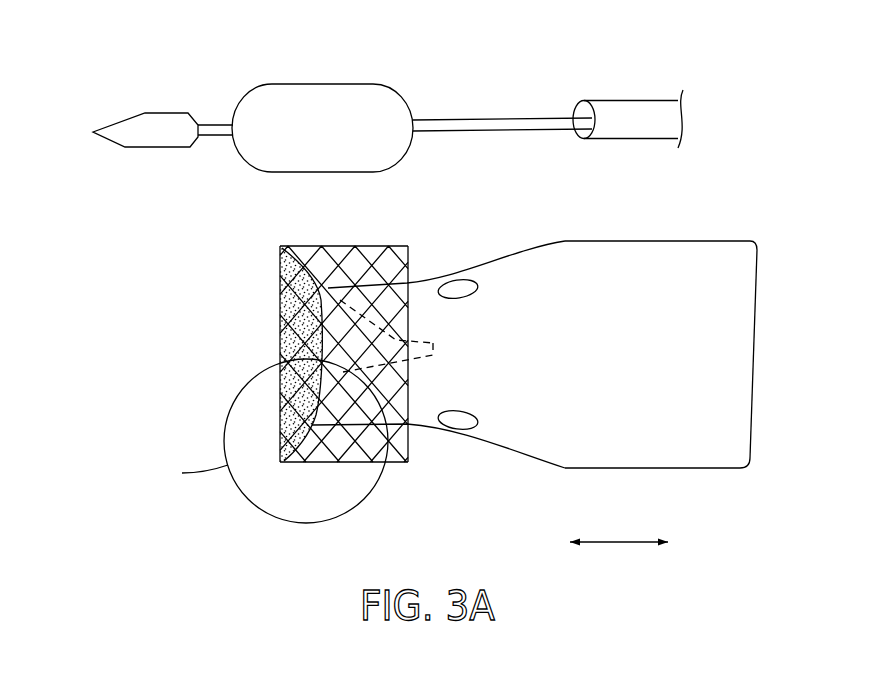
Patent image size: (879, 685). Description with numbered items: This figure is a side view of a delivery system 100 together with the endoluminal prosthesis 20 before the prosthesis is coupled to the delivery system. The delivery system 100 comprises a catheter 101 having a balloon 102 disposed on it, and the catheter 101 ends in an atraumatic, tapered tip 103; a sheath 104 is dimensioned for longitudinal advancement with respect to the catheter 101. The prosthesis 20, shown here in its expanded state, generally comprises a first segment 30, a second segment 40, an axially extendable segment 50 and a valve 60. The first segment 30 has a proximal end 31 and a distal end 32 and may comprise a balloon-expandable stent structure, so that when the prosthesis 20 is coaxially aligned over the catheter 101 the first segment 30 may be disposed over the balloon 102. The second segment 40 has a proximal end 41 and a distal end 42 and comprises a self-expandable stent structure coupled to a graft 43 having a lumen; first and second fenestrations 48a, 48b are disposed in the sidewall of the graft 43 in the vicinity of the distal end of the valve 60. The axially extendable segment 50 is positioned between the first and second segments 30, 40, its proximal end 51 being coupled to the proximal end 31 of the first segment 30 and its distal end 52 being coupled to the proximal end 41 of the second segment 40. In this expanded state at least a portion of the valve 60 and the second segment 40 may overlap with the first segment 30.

The delivery system 100 is at (221, 70).
The catheter 101 is at (495, 123).
The balloon 102 is at (353, 138).
The tapered tip 103 is at (145, 130).
The sheath 104 is at (633, 119).
The endoluminal prosthesis 20 is at (250, 262).
The first segment 30 is at (338, 468).
The proximal end of first segment 31 is at (285, 463).
The distal end of first segment 32 is at (402, 463).
The second segment 40 is at (650, 426).
The proximal end of second segment 41 is at (333, 288).
The distal end of second segment 42 is at (735, 241).
The graft 43 is at (722, 450).
The first fenestration 48a is at (458, 288).
The second fenestration 48b is at (457, 420).
The axially extendable segment 50 is at (282, 343).
The proximal end of axially extendable segment 51 is at (280, 408).
The distal end of axially extendable segment 52 is at (293, 299).
The valve 60 is at (423, 343).